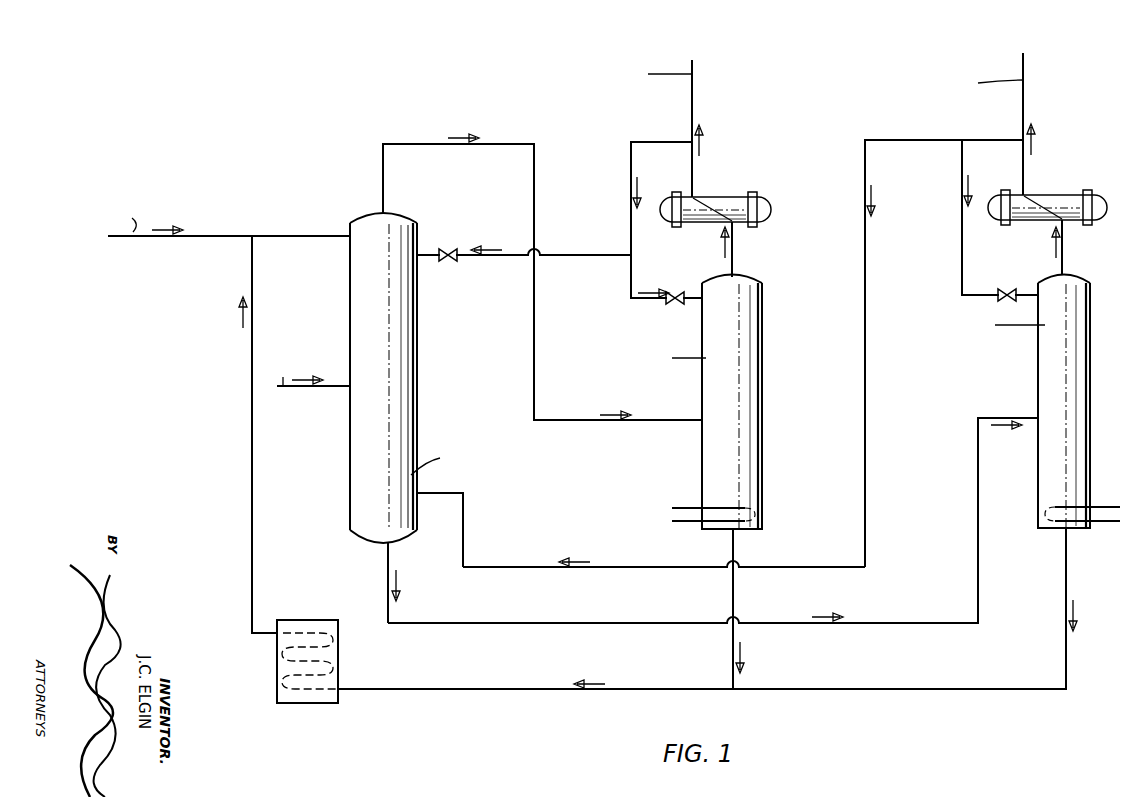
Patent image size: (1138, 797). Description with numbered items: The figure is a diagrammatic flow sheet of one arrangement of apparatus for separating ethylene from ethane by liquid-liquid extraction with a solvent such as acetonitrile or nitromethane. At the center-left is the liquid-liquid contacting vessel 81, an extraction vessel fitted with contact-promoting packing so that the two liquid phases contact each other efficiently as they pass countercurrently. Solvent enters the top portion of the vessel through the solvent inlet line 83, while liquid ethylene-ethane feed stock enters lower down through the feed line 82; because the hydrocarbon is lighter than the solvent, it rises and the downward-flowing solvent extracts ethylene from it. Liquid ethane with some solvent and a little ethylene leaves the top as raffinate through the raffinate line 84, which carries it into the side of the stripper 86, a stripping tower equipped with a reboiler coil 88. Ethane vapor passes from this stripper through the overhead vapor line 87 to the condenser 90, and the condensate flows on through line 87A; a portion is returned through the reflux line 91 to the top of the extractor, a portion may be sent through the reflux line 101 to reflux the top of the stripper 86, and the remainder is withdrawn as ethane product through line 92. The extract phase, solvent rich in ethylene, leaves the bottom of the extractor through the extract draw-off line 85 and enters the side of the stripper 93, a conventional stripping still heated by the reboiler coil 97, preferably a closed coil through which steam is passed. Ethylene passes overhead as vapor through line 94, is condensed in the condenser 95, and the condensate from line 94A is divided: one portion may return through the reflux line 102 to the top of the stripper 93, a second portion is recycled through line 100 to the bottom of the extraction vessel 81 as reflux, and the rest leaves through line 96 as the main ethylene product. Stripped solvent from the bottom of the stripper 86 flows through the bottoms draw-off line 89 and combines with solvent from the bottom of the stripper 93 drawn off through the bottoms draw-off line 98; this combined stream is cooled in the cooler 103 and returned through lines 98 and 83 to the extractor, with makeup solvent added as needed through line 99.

The liquid-liquid contacting vessel 81 is at (350, 339).
The feed line 82 is at (328, 388).
The solvent inlet line 83 is at (325, 236).
The raffinate line 84 is at (486, 144).
The extract draw-off line 85 is at (388, 606).
The stripper 86 is at (702, 333).
The overhead vapor line 87 is at (733, 260).
The condensate line 87A is at (693, 176).
The reboiler coil 88 is at (730, 506).
The bottoms draw-off line 89 is at (733, 604).
The condenser 90 is at (759, 199).
The reflux line 91 is at (546, 255).
The product line 92 is at (693, 86).
The stripper 93 is at (1091, 334).
The overhead vapor line 94 is at (1064, 256).
The condensate line 94A is at (1025, 174).
The condenser 95 is at (1094, 198).
The product line 96 is at (1025, 85).
The reboiler coil 97 is at (1062, 507).
The bottoms draw-off line 98 is at (250, 395).
The makeup solvent line 99 is at (146, 237).
The reflux line 100 is at (680, 567).
The reflux line 101 is at (630, 290).
The reflux line 102 is at (961, 286).
The cooler 103 is at (338, 679).